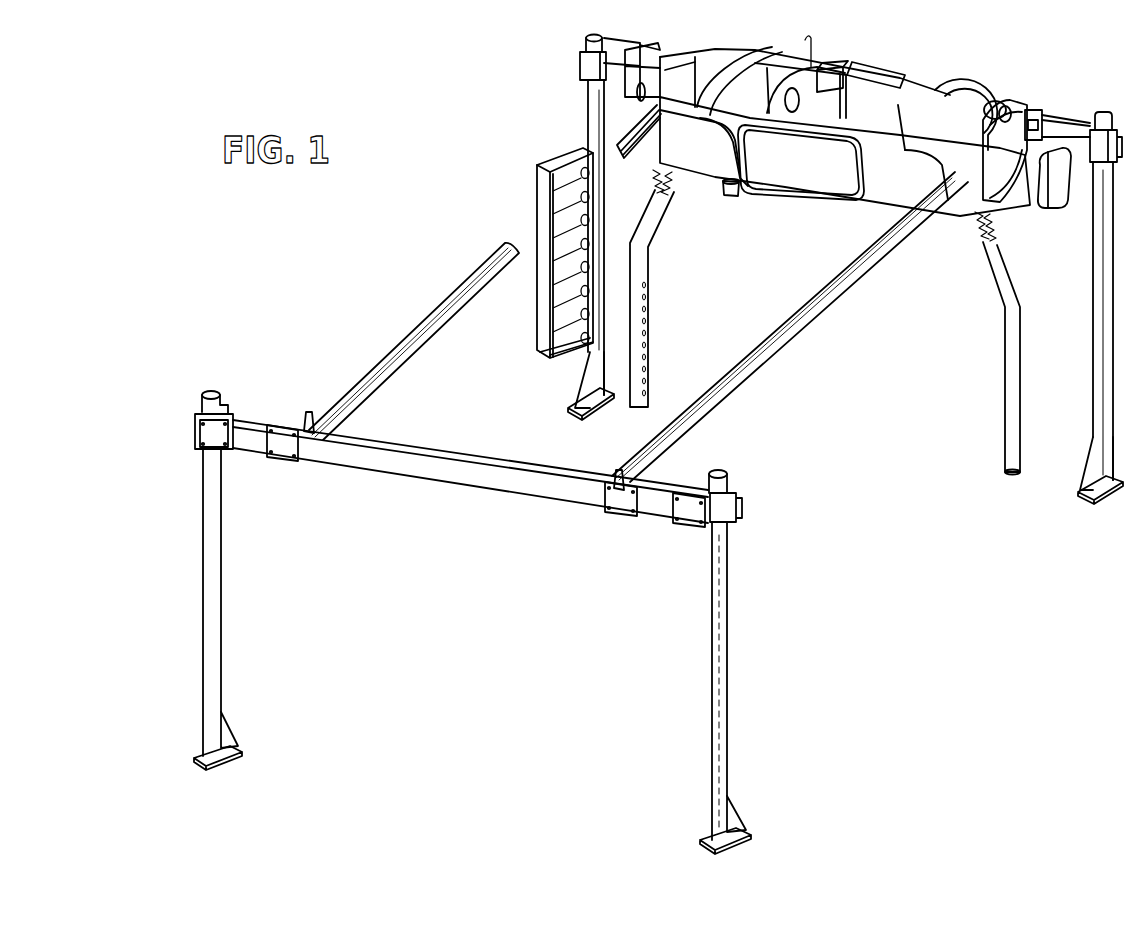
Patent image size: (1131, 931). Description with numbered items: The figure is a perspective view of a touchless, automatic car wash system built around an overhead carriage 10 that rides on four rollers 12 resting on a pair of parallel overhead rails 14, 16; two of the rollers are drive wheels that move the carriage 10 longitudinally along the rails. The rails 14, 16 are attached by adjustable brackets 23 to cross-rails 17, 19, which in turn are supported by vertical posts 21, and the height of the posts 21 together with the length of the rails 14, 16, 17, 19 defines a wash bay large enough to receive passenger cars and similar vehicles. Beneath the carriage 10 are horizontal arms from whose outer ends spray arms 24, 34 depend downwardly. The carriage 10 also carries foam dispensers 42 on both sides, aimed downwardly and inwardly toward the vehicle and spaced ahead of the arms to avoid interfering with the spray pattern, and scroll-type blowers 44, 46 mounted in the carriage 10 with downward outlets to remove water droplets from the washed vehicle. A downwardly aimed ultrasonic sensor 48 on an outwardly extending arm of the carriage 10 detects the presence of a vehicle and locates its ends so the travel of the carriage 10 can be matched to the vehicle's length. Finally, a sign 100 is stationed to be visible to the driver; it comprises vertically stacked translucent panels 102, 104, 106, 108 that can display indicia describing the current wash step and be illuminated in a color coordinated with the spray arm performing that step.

The overhead carriage 10 is at (798, 143).
The rollers 12 is at (997, 100).
The overhead rail 14 is at (840, 283).
The overhead rail 16 is at (493, 253).
The cross-rail 17 is at (468, 462).
The cross-rail 19 is at (1063, 112).
The vertical posts 21 is at (723, 643).
The adjustable brackets 23 is at (600, 498).
The spray arm 24 is at (650, 332).
The spray arm 34 is at (1007, 393).
The foam dispensers 42 is at (1058, 205).
The scroll-type blower 44 is at (913, 87).
The scroll-type blower 46 is at (760, 58).
The ultrasonic sensor 48 is at (737, 194).
The sign 100 is at (534, 241).
The translucent panel 102 is at (570, 180).
The translucent panel 104 is at (562, 208).
The translucent panel 106 is at (558, 232).
The translucent panel 108 is at (562, 253).